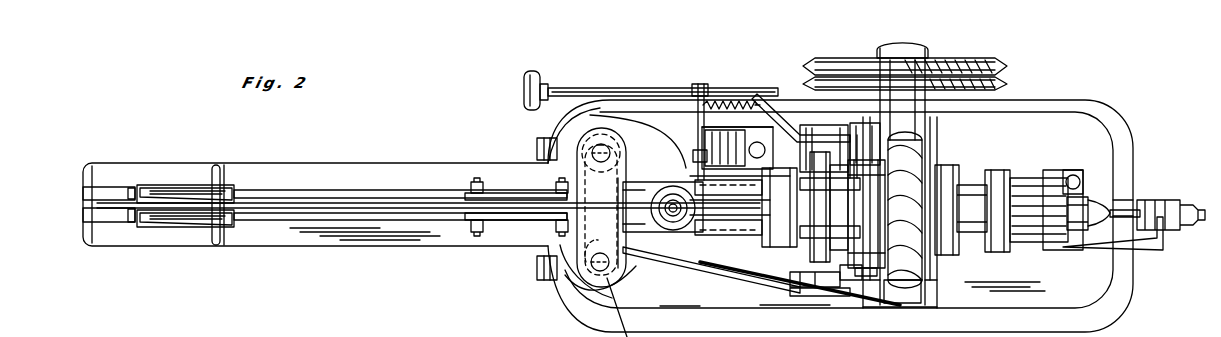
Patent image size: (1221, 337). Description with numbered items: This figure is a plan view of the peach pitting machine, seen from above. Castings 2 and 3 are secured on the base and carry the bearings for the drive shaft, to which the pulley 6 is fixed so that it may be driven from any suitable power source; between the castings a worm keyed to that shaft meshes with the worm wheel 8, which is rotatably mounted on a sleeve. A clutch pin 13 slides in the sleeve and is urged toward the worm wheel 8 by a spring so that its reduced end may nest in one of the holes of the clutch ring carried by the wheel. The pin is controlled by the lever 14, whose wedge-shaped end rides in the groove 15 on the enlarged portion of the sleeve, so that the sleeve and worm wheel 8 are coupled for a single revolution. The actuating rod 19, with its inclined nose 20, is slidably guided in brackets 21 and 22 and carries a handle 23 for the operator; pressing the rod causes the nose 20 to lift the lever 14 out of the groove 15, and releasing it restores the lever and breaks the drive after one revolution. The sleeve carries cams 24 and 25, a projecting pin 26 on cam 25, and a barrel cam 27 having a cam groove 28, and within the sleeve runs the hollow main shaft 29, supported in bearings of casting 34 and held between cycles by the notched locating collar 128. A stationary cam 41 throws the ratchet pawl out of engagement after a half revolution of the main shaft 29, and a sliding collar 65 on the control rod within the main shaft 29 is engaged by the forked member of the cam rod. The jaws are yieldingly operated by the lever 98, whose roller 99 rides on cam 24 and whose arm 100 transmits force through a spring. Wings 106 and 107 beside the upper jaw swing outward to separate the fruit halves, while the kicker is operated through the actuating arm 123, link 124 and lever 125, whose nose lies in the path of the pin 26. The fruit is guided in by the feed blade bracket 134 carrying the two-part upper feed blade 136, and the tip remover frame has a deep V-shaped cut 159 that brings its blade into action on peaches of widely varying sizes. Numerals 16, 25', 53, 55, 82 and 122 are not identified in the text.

The casting 2 is at (925, 290).
The casting 3 is at (940, 118).
The pulley 6 is at (968, 66).
The worm wheel 8 is at (948, 168).
The clutch pin 13 is at (845, 170).
The lever 14 is at (870, 150).
The groove 15 is at (852, 275).
The worm 16 is at (912, 150).
The actuating rod 19 is at (645, 88).
The inclined nose 20 is at (840, 125).
The bracket 21 is at (704, 86).
The bracket 22 is at (900, 125).
The handle 23 is at (535, 75).
The cam 24 is at (858, 126).
The cam 25 is at (815, 289).
The spring 25' is at (745, 76).
The projecting pin 26 is at (835, 295).
The barrel cam 27 is at (963, 182).
The cam groove 28 is at (992, 172).
The main shaft 29 is at (1125, 210).
The casting 34 is at (795, 110).
The stationary cam 41 is at (805, 130).
The bearing block 53 is at (1065, 186).
The sleeve 55 is at (1048, 185).
The sliding collar 65 is at (1098, 200).
The end fitting 82 is at (1178, 204).
The lever 98 is at (750, 140).
The roller 99 is at (800, 283).
The arm 100 is at (676, 186).
The wing 106 is at (546, 270).
The wing 107 is at (615, 160).
The casing bottom 122 is at (680, 313).
The actuating arm 123 is at (618, 266).
The link 124 is at (711, 272).
The lever 125 is at (790, 296).
The locating collar 128 is at (1020, 178).
The feed blade bracket 134 is at (505, 190).
The upper feed blade 136 is at (316, 204).
The V-shaped cut 159 is at (182, 217).